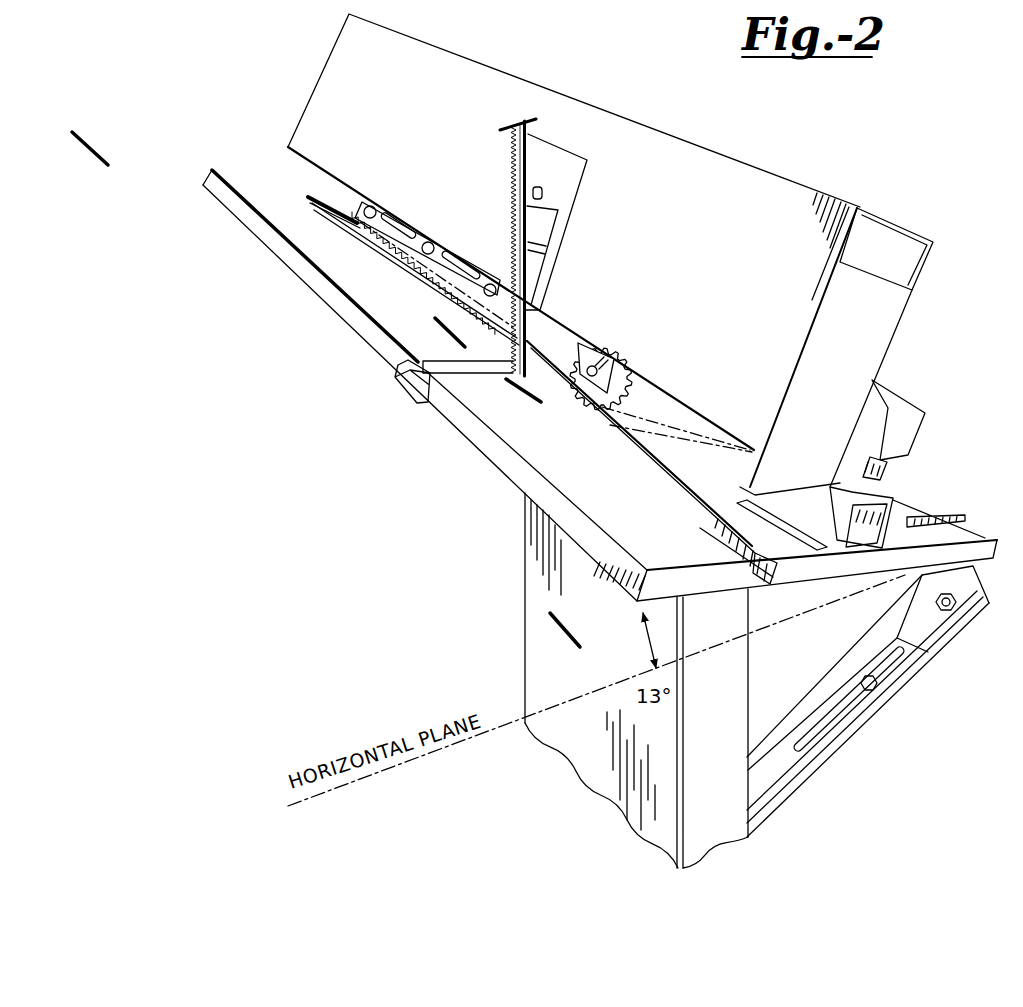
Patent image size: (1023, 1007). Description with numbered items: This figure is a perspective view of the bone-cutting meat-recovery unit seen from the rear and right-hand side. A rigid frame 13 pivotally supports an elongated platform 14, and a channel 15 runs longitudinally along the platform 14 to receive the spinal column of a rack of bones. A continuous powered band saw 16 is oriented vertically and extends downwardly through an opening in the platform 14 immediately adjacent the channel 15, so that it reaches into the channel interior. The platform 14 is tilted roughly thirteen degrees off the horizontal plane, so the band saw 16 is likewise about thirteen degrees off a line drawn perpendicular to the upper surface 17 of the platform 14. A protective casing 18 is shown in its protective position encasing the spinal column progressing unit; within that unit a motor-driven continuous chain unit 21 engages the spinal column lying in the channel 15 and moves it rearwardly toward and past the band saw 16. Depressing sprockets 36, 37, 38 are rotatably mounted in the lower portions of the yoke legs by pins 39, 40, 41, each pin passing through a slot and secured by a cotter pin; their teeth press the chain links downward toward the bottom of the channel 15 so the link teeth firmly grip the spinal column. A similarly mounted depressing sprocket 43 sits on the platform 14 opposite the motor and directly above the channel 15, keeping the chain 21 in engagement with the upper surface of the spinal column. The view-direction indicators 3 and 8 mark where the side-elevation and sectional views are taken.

The section line 3- 3 is at (74, 134).
The section line 8- 8 is at (438, 322).
The rigid frame 13 is at (593, 750).
The elongated platform 14 is at (514, 495).
The channel 15 is at (683, 502).
The continuous powered band saw 16 is at (510, 161).
The upper surface 17 is at (260, 188).
The protective casing 18 is at (662, 173).
The continuous chain unit 21 is at (668, 415).
The depressing sprocket 36 is at (363, 250).
The depressing sprocket 37 is at (423, 280).
The depressing sprocket 38 is at (485, 313).
The pin 39 is at (371, 206).
The pin 40 is at (428, 242).
The pin 41 is at (489, 284).
The depressing sprocket 43 is at (592, 397).